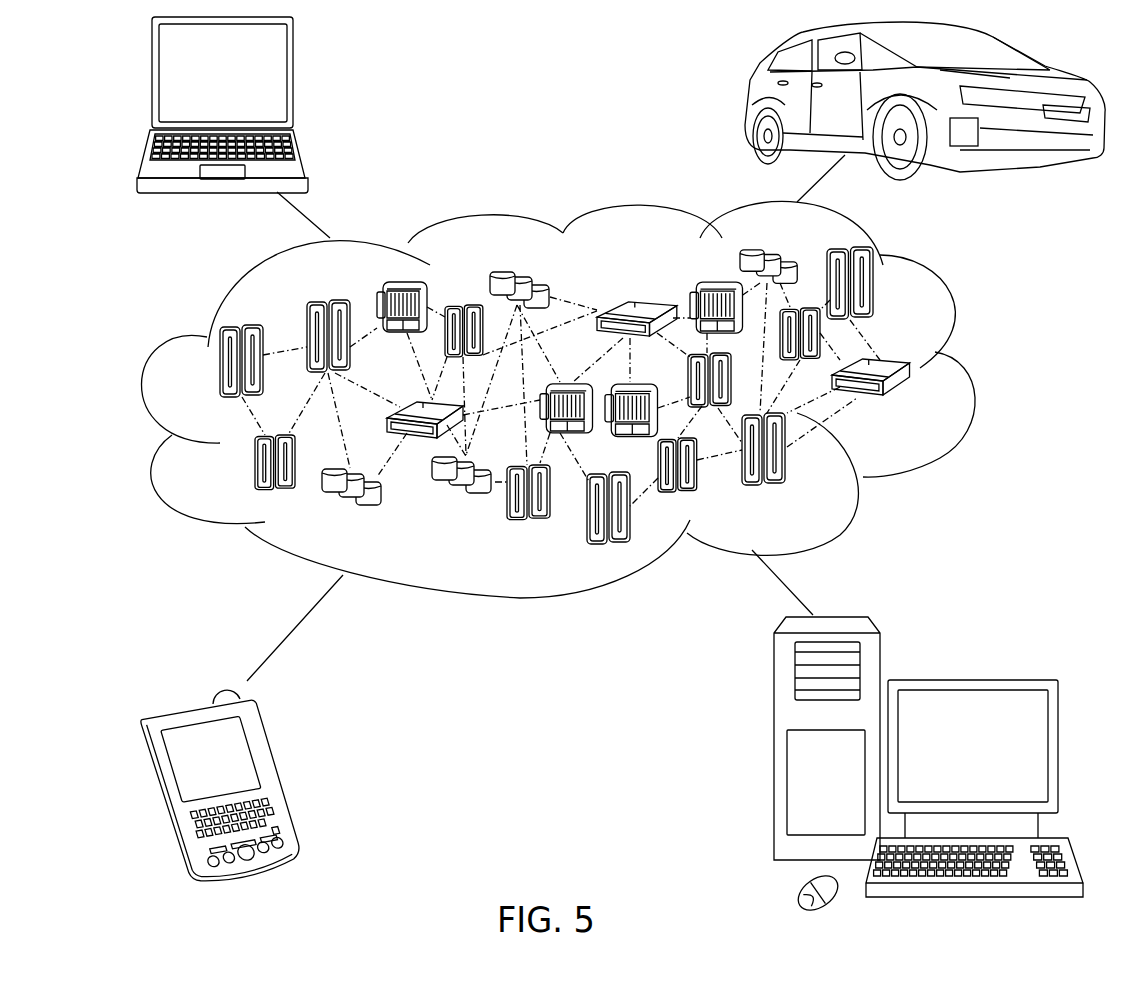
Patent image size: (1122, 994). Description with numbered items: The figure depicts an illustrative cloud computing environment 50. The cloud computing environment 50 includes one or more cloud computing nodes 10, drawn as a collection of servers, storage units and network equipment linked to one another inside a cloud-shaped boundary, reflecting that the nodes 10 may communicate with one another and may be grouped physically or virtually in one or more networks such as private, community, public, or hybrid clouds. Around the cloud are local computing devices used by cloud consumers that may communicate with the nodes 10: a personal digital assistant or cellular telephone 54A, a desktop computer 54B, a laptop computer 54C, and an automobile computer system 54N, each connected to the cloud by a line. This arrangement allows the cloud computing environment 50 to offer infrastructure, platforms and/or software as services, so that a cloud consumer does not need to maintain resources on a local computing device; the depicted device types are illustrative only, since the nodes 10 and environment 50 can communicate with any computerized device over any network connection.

The cloud computing environment 50 is at (968, 373).
The cloud computing nodes 10 is at (911, 404).
The personal digital assistant (PDA) or cellular telephone 54A is at (280, 777).
The desktop computer 54B is at (970, 679).
The laptop computer 54C is at (297, 82).
The automobile computer system 54N is at (750, 102).